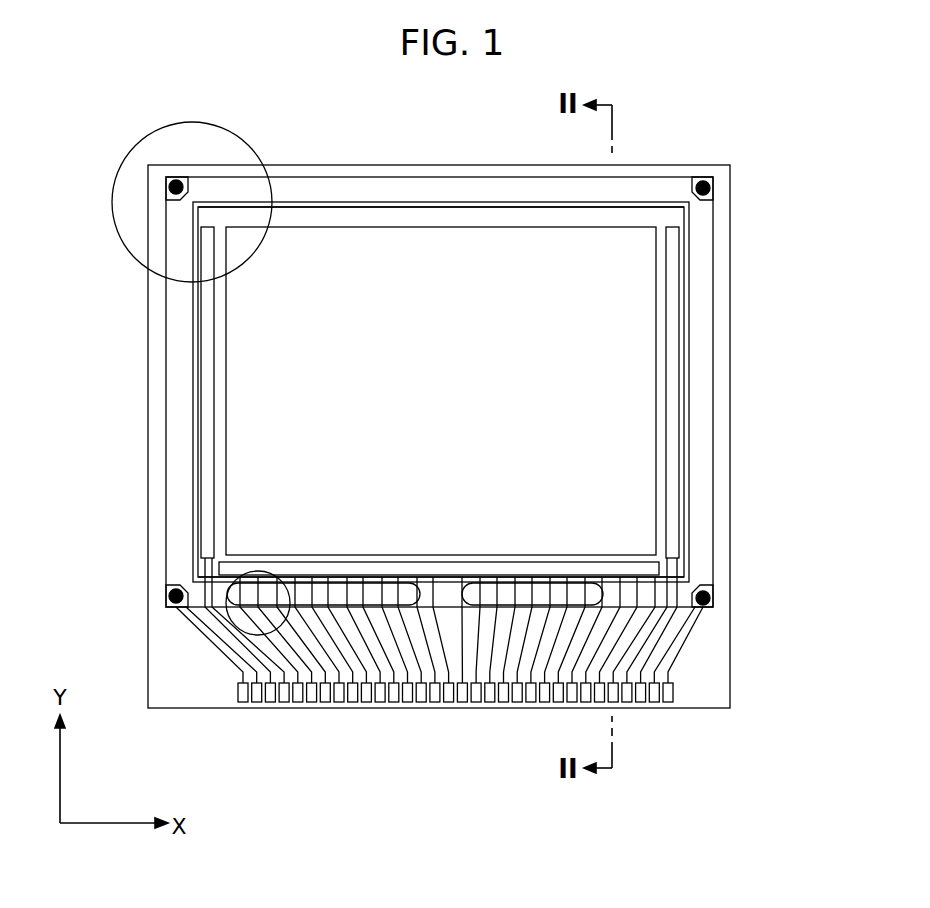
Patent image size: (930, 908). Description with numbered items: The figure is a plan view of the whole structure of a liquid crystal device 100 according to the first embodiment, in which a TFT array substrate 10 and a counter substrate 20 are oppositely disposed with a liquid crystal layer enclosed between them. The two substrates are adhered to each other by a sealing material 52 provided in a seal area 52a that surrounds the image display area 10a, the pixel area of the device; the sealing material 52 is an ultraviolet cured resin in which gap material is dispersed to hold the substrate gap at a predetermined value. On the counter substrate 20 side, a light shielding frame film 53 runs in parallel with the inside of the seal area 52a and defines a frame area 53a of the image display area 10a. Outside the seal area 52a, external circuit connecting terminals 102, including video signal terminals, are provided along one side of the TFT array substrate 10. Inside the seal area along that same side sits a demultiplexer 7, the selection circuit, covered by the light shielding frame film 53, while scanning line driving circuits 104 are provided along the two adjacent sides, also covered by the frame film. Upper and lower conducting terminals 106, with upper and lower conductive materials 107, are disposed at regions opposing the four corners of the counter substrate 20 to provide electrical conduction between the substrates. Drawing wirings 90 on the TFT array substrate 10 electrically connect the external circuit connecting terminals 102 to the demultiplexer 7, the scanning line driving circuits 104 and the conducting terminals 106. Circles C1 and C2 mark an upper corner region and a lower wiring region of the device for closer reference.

The liquid crystal device 100 is at (750, 132).
The TFT array substrate 10 is at (300, 173).
The image display area 10a is at (260, 345).
The counter substrate 20 is at (461, 177).
The sealing material 52 is at (703, 343).
The seal area 52a is at (703, 300).
The light shielding frame film 53 is at (690, 558).
The frame area 53a is at (678, 222).
The scanning line driving circuits 104 is at (675, 395).
The demultiplexer 7 is at (290, 567).
The upper and lower conducting terminals 106 is at (690, 181).
The upper and lower conductive materials 107 is at (170, 597).
The drawing wirings 90 is at (193, 633).
The external circuit connecting terminals 102 is at (408, 703).
The enlarged region C1 is at (143, 141).
The enlarged region C2 is at (240, 634).